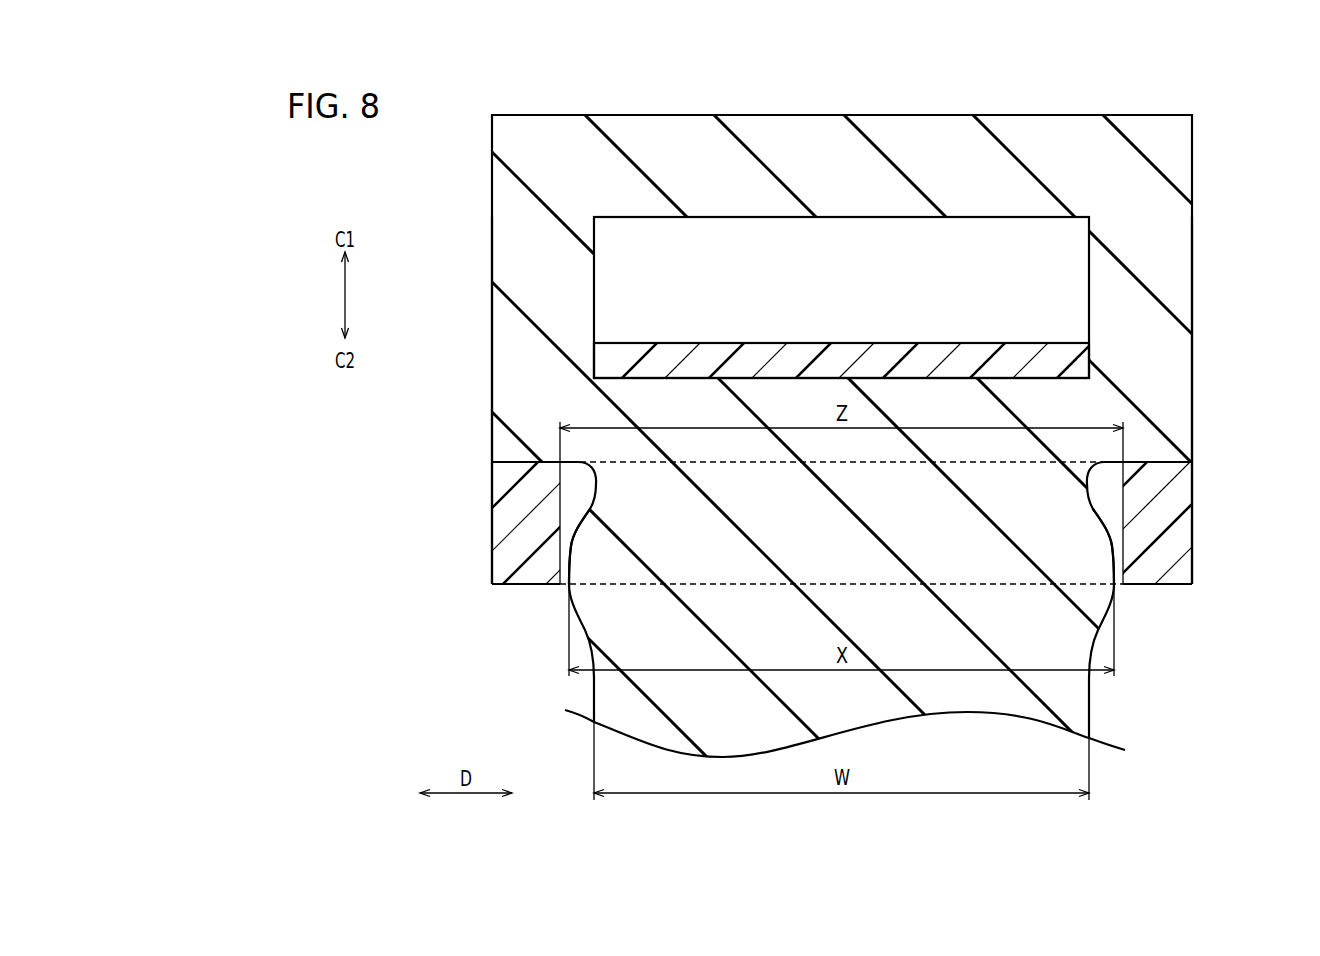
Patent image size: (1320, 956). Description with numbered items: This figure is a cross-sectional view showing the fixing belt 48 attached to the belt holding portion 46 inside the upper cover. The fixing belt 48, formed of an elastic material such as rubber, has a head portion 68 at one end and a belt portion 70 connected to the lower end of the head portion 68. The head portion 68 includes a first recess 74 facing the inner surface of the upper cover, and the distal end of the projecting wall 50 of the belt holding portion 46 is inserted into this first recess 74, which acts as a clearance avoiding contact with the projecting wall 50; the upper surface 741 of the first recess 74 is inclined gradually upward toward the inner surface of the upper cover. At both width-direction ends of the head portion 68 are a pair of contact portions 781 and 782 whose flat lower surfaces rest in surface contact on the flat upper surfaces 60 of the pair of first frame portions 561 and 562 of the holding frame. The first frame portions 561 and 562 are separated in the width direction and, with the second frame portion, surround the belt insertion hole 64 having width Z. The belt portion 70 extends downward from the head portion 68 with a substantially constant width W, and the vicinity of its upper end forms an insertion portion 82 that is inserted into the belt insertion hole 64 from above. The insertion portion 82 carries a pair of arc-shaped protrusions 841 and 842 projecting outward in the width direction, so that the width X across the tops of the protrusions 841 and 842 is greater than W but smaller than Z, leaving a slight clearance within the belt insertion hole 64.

The fixing belt 48 is at (1203, 187).
The head portion 68 is at (800, 134).
The first recess 74 is at (727, 238).
The upper surface of the first recess 741 is at (873, 222).
The projecting wall 50 is at (800, 355).
The contact portion 782 is at (510, 376).
The contact portion 781 is at (1175, 378).
The upper surface 60 is at (513, 462).
The belt holding portion 46 is at (1203, 488).
The first frame portion 562 is at (508, 535).
The first frame portion 561 is at (1175, 535).
The belt portion 70 is at (965, 705).
The insertion portion 82 is at (687, 567).
The belt insertion hole 64 is at (1116, 499).
The protrusion 842 is at (587, 560).
The protrusion 841 is at (1098, 560).